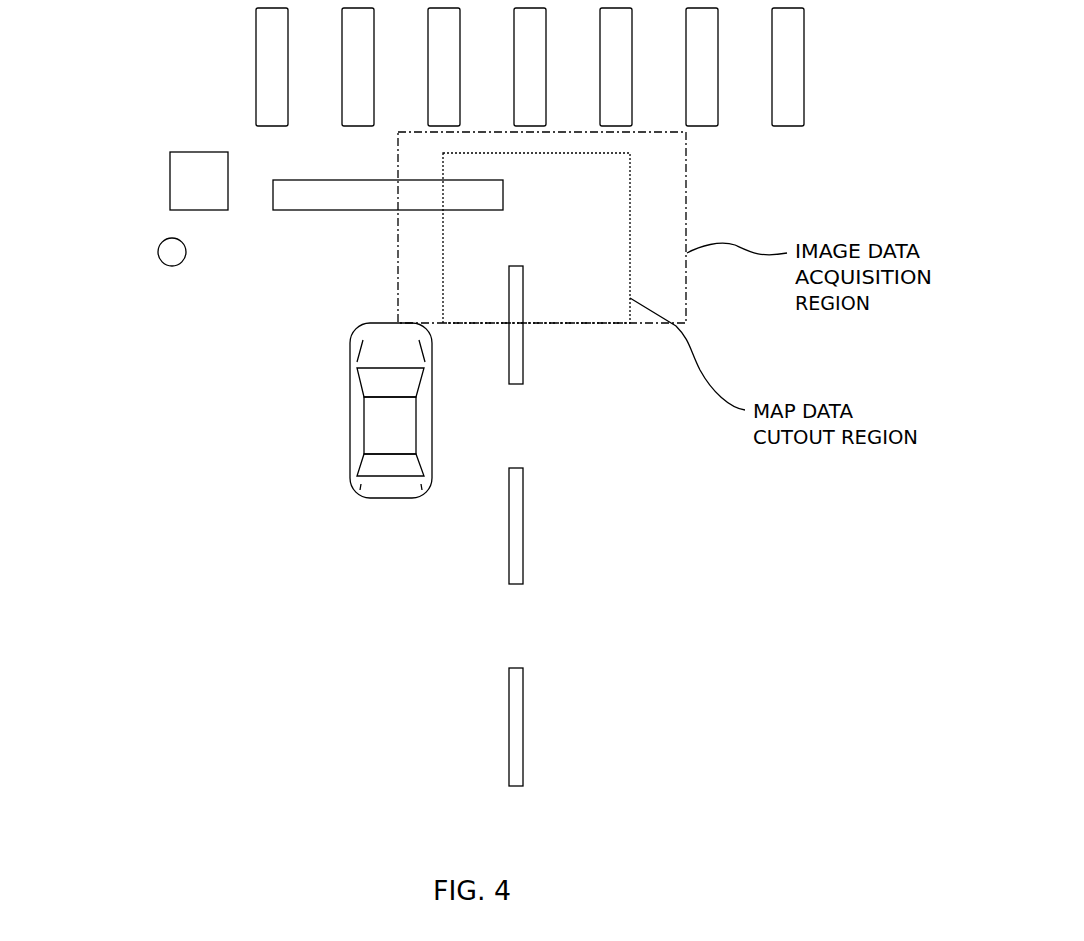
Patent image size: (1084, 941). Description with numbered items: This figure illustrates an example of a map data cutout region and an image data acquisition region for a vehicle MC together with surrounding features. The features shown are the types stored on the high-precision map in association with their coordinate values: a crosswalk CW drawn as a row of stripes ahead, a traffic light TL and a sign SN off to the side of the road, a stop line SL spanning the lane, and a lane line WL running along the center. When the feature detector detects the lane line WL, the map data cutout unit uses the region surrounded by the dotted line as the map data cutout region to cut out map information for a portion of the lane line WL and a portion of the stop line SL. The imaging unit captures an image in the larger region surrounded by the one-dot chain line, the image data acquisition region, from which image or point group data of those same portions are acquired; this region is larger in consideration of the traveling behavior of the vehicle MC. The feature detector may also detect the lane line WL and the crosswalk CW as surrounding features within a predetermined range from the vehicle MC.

The crosswalk CW is at (804, 63).
The traffic light TL is at (170, 182).
The sign SN is at (157, 255).
The stop line SL is at (503, 192).
The lane line WL is at (523, 372).
The vehicle MC is at (348, 420).